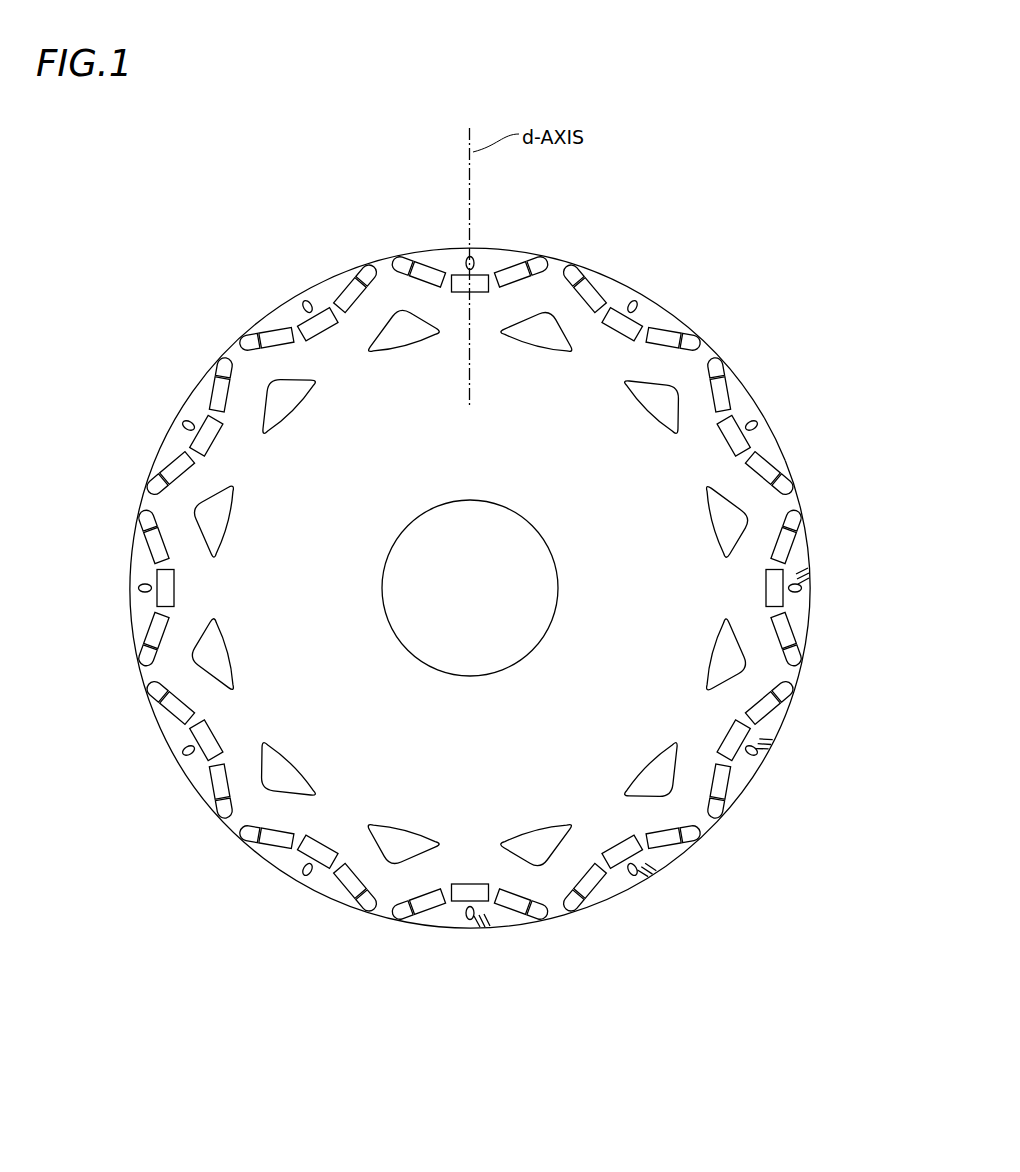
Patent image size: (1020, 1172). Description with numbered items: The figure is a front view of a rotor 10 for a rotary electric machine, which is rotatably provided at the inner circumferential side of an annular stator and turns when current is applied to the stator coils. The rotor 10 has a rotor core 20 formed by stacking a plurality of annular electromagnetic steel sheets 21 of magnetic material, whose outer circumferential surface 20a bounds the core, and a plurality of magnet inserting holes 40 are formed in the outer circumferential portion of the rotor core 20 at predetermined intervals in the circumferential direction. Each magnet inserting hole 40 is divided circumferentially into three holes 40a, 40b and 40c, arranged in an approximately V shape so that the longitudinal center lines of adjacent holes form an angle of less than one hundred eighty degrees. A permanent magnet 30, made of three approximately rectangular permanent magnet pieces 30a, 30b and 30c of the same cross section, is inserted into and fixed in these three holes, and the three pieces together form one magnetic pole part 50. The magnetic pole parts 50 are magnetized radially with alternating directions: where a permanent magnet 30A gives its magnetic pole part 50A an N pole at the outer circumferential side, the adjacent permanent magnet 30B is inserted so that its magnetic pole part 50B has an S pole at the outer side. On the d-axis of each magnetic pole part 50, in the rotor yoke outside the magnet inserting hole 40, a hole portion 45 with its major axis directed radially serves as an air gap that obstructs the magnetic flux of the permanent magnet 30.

The rotor 10 is at (753, 242).
The rotor core 20 is at (470, 588).
The outer circumferential surface of rotor core 20a is at (778, 442).
The electromagnetic steel sheet 21 is at (790, 487).
The permanent magnet 30 is at (783, 600).
The permanent magnet piece 30a is at (214, 795).
The permanent magnet piece 30b is at (186, 755).
The permanent magnet piece 30c is at (183, 722).
The permanent magnet 30A is at (748, 764).
The permanent magnet 30B is at (620, 858).
The magnet inserting hole 40 is at (797, 666).
The hole 40a is at (142, 632).
The hole 40b is at (156, 592).
The hole 40c is at (142, 553).
The hole portion 45 is at (473, 262).
The magnetic pole part 50 is at (820, 582).
The magnetic pole part 50A is at (763, 738).
The magnetic pole part 50B is at (648, 868).